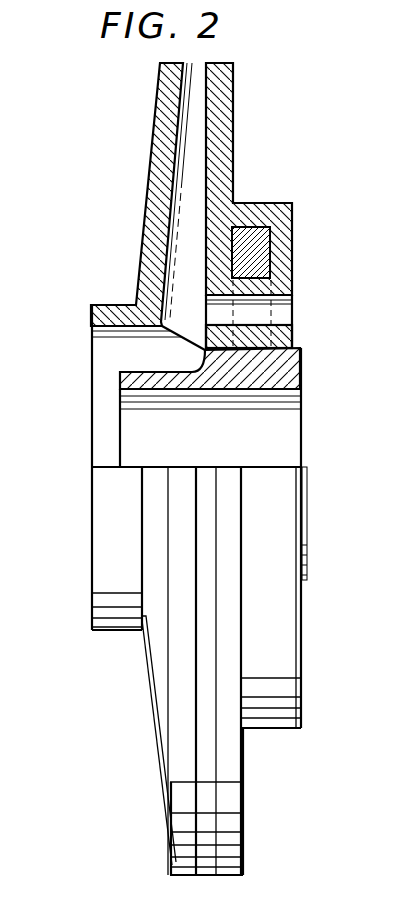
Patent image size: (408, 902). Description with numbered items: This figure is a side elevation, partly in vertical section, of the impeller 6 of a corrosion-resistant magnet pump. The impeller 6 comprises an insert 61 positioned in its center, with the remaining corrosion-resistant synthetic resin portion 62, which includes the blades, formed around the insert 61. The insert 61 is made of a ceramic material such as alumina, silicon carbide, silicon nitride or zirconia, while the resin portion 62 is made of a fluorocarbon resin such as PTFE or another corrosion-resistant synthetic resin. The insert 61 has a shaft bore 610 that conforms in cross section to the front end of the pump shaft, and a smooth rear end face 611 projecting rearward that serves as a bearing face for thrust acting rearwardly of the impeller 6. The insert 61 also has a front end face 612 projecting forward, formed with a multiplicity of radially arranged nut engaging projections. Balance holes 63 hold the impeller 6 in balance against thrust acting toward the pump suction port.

The impeller 6 is at (150, 158).
The corrosion-resistant synthetic resin portion 62 is at (166, 96).
The balance holes 63 is at (238, 297).
The insert 61 is at (282, 347).
The rear end face 611 is at (300, 387).
The front end face 612 is at (120, 423).
The shaft bore 610 is at (280, 448).